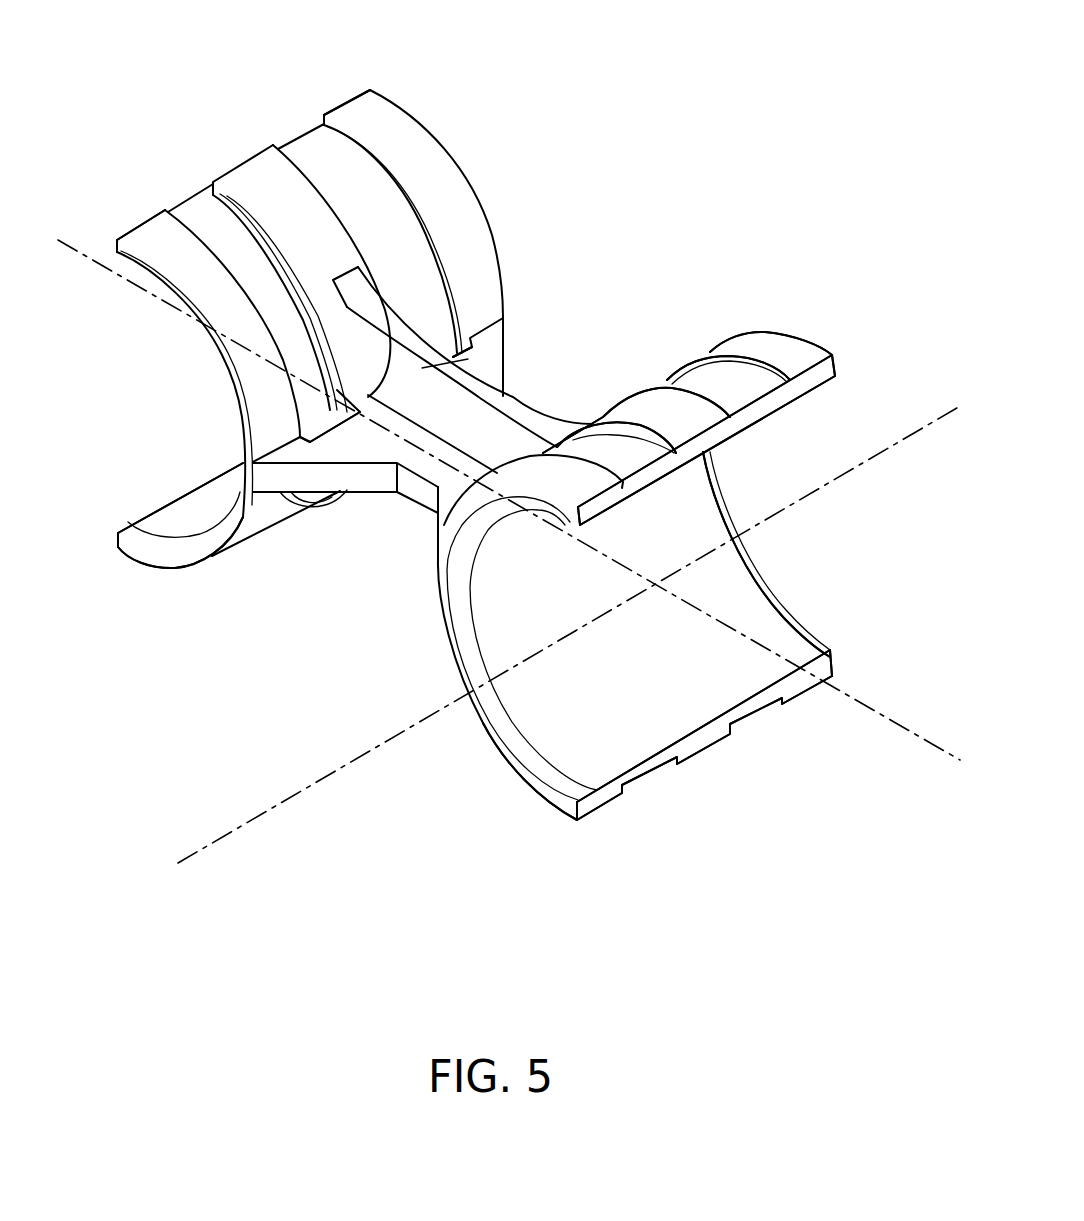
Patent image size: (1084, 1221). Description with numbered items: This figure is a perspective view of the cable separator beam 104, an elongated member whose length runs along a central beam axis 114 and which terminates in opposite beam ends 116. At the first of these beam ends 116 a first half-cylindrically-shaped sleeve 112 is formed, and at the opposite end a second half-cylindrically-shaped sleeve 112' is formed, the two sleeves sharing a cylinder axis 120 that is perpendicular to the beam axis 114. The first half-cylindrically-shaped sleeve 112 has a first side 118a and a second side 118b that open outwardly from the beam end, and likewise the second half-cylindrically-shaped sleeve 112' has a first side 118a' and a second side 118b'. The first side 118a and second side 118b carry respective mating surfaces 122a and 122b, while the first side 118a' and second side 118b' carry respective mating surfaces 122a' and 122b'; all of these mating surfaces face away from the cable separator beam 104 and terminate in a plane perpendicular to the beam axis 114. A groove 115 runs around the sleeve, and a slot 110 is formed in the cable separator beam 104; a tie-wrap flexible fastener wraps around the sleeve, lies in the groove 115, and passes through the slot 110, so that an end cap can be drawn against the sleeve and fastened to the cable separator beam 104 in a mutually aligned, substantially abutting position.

The cable separator beam 104 is at (534, 372).
The slot 110 is at (527, 195).
The first half-cylindrically-shaped sleeve 112 is at (519, 576).
The second half-cylindrically-shaped sleeve 112' is at (272, 432).
The beam axis 114 is at (912, 734).
The groove 115 is at (712, 388).
The beam end 116 is at (480, 473).
The first side 118a is at (706, 380).
The first side 118a' is at (387, 68).
The second side 118b is at (486, 786).
The second side 118b' is at (180, 590).
The cylinder axis 120 is at (213, 836).
The mating surface 122a is at (814, 528).
The mating surface 122a' is at (112, 197).
The mating surface 122b is at (704, 753).
The mating surface 122b' is at (156, 485).